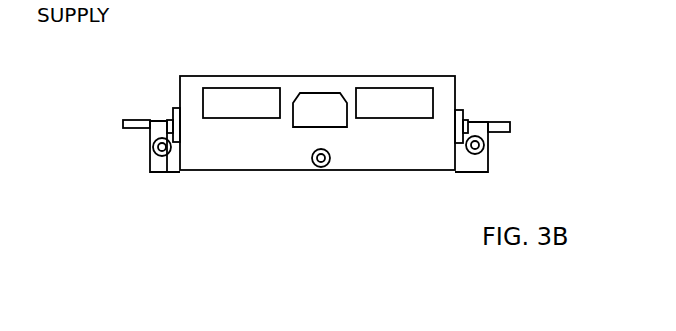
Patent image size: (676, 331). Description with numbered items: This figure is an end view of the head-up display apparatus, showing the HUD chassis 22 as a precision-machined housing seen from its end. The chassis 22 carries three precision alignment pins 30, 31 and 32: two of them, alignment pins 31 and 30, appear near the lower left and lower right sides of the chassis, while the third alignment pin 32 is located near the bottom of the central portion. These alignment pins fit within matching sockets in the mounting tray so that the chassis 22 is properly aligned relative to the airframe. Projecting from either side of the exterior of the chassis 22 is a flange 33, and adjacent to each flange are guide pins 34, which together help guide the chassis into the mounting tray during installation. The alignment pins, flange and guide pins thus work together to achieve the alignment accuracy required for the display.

The HUD chassis 22 is at (445, 62).
The precision alignment pin 30 is at (485, 145).
The precision alignment pin 31 is at (155, 155).
The precision alignment pin 32 is at (330, 177).
The flange 33 is at (124, 123).
The guide pins 34 is at (166, 121).